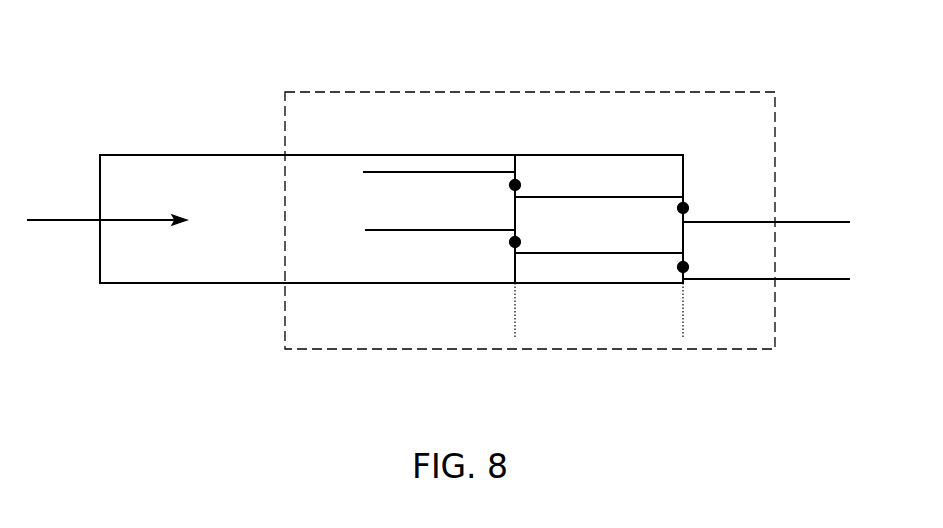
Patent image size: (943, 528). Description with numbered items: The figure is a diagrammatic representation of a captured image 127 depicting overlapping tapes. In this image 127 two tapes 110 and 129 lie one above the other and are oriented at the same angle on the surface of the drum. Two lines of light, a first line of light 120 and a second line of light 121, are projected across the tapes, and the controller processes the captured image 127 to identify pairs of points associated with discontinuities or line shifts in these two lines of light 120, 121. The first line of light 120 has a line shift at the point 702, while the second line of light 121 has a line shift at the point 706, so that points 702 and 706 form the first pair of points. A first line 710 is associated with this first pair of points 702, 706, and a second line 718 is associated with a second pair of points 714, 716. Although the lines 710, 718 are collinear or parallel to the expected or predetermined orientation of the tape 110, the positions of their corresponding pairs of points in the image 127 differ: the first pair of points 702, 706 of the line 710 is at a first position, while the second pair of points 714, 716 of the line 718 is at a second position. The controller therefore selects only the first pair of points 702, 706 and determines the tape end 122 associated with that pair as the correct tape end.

The tape 110 is at (163, 155).
The captured image 127 is at (365, 92).
The first line of light 120 is at (420, 172).
The second line of light 121 is at (390, 228).
The tape end 122 is at (518, 160).
The tape 129 is at (660, 155).
The point 702 is at (510, 186).
The point 706 is at (510, 243).
The first line 710 is at (513, 312).
The point 714 is at (678, 210).
The point 716 is at (680, 272).
The second line 718 is at (686, 312).